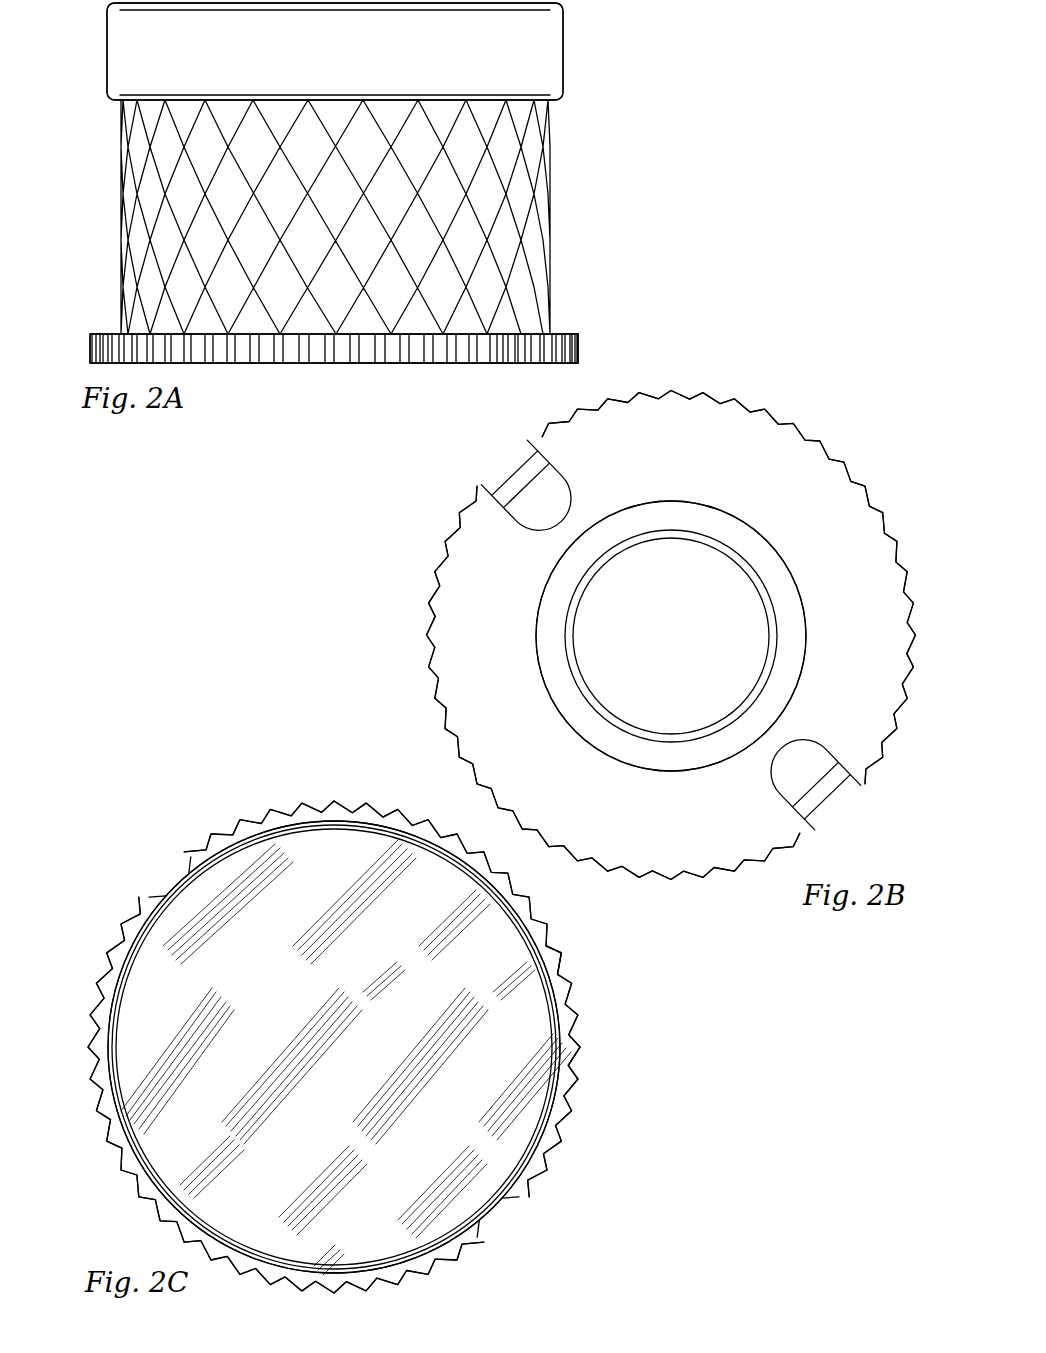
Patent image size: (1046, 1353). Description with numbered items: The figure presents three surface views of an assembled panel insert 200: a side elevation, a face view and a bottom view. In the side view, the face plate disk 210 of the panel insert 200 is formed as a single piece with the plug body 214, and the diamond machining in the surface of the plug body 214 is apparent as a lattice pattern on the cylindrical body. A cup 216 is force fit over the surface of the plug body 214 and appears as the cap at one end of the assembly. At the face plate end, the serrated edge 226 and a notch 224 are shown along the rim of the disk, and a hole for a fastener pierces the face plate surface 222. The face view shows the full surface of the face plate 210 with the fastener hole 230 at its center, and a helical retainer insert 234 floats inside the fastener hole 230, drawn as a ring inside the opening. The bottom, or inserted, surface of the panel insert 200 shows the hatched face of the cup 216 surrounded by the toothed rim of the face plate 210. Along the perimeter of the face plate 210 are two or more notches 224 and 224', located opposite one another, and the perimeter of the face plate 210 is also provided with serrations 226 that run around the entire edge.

In FIG. 2A, the panel insert 200 is at (658, 65).
In FIG. 2B, the panel insert 200 is at (851, 447).
In FIG. 2C, the panel insert 200 is at (630, 1172).
In FIG. 2A, the face plate disk 210 is at (405, 366).
In FIG. 2B, the face plate disk 210 is at (857, 523).
In FIG. 2C, the face plate disk 210 is at (560, 953).
In FIG. 2A, the plug body 214 is at (553, 197).
In FIG. 2A, the cup 216 is at (561, 36).
In FIG. 2C, the cup 216 is at (543, 1163).
In FIG. 2A, the face plate surface 222 is at (291, 382).
In FIG. 2B, the face plate surface 222 is at (455, 592).
In FIG. 2C, the face plate surface 222 is at (334, 1047).
In FIG. 2A, the notch 224 is at (479, 371).
In FIG. 2B, the notch 224 is at (848, 794).
In FIG. 2C, the notch 224 is at (542, 1226).
In FIG. 2B, the notch 224' is at (478, 485).
In FIG. 2C, the notch 224' is at (131, 863).
In FIG. 2A, the serrated edge 226 is at (579, 350).
In FIG. 2C, the serrated edge 226 is at (588, 1081).
In FIG. 2B, the fastener hole 230 is at (605, 615).
In FIG. 2B, the helical retainer insert 234 is at (604, 697).